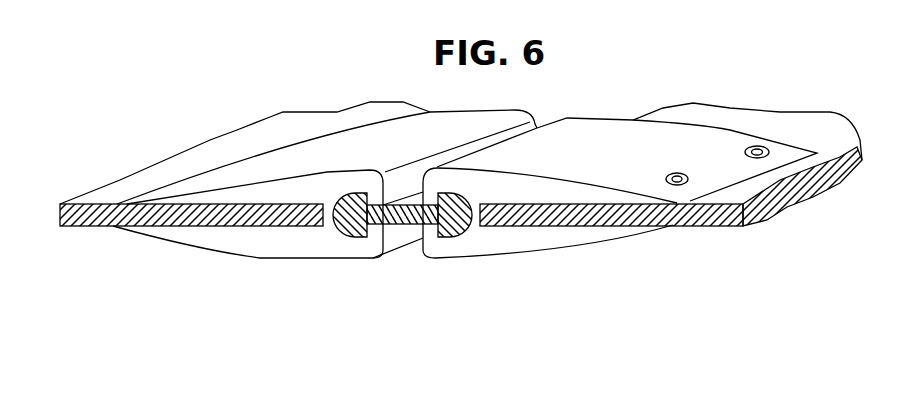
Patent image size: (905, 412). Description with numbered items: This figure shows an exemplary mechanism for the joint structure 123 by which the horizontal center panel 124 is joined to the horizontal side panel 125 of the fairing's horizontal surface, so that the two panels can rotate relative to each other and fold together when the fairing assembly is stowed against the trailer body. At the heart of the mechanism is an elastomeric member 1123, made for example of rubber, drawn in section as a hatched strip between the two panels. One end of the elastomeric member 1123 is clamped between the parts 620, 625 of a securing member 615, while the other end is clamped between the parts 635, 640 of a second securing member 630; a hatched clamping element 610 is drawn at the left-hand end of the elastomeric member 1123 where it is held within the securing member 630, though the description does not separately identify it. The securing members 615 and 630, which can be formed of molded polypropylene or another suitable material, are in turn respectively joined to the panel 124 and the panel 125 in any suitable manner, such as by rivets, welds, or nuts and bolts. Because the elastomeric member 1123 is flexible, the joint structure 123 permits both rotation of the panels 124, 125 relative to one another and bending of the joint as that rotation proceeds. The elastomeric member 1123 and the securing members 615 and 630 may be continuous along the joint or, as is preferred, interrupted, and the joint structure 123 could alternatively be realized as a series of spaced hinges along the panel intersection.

The joint structure 123 is at (446, 281).
The horizontal center panel 124 is at (635, 215).
The horizontal side panel 125 is at (217, 222).
The first hinge knuckle 610 is at (353, 237).
The securing member 615 is at (455, 250).
The part of securing member 620 is at (512, 250).
The part of securing member 625 is at (550, 177).
The securing member 630 is at (290, 250).
The part of securing member 635 is at (328, 173).
The part of securing member 640 is at (162, 233).
The elastomeric member 1123 is at (403, 262).